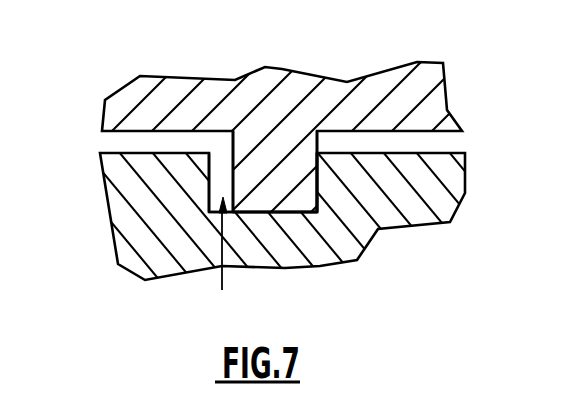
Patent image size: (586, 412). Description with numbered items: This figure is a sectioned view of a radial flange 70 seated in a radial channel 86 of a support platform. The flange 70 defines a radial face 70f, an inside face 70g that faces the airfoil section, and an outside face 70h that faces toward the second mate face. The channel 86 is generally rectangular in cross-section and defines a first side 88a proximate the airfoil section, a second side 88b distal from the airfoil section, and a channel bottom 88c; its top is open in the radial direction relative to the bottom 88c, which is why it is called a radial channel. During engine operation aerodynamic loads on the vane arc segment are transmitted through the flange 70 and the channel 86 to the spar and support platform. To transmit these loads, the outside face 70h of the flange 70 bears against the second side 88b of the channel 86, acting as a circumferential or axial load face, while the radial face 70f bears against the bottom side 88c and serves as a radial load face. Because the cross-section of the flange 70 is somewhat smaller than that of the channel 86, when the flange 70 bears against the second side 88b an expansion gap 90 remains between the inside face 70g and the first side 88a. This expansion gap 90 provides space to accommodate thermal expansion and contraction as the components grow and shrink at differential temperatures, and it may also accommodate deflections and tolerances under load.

The flange 70 is at (255, 174).
The radial face 70f is at (285, 204).
The inside face 70g is at (233, 152).
The outside face 70h is at (322, 163).
The channel 86 is at (222, 290).
The first side 88a is at (211, 163).
The second side 88b is at (316, 192).
The channel bottom 88c is at (288, 212).
The expansion gap 90 is at (222, 170).